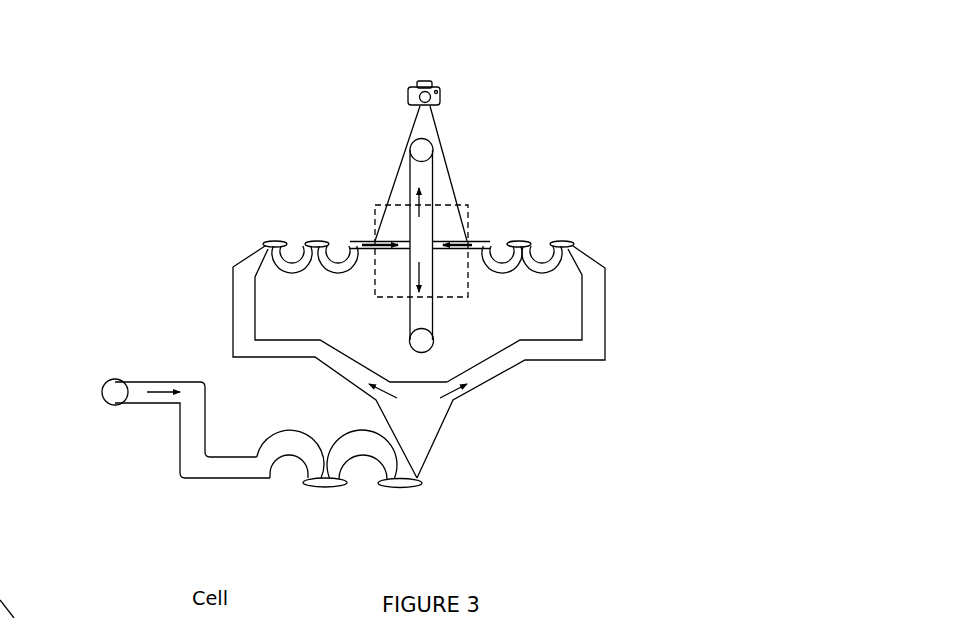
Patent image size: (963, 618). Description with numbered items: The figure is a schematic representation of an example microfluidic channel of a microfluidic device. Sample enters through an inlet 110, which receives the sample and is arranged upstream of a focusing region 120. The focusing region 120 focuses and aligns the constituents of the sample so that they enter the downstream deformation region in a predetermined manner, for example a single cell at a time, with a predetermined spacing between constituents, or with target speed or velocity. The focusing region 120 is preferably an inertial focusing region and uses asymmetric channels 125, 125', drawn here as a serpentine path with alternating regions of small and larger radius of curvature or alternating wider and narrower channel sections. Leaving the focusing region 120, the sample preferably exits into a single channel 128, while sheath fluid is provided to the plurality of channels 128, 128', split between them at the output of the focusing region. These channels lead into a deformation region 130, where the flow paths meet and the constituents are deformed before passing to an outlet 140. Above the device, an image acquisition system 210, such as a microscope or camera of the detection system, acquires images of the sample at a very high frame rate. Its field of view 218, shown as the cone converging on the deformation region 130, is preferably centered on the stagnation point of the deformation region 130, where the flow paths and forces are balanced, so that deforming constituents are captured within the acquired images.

The inlet 110 is at (100, 370).
The focusing region 120 is at (288, 225).
The asymmetric channel 125 is at (281, 439).
The asymmetric channel 125' is at (416, 502).
The single channel 128 is at (533, 362).
The channel 128' is at (288, 362).
The deformation region 130 is at (443, 226).
The outlet 140 is at (403, 323).
The image acquisition system 210 is at (395, 83).
The field of view 218 is at (372, 192).